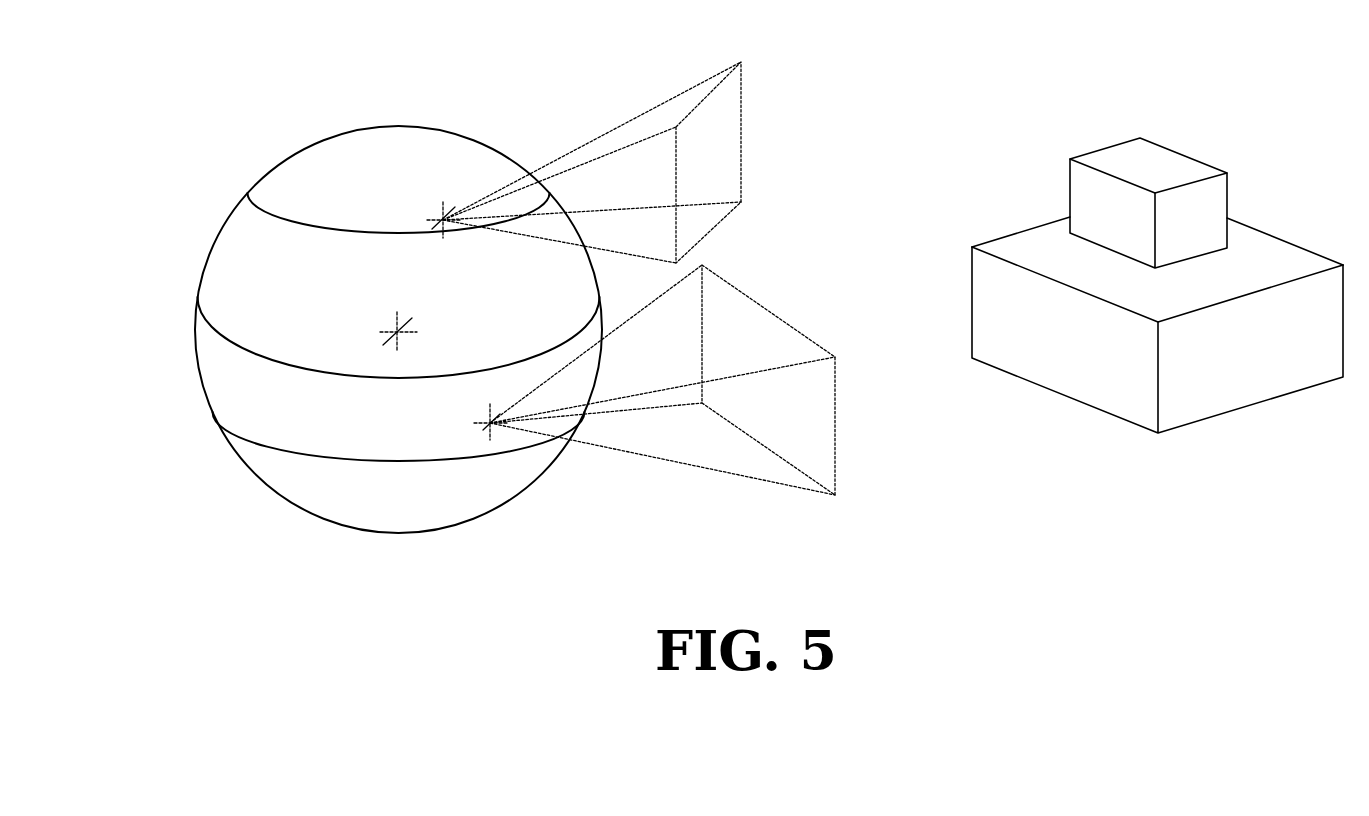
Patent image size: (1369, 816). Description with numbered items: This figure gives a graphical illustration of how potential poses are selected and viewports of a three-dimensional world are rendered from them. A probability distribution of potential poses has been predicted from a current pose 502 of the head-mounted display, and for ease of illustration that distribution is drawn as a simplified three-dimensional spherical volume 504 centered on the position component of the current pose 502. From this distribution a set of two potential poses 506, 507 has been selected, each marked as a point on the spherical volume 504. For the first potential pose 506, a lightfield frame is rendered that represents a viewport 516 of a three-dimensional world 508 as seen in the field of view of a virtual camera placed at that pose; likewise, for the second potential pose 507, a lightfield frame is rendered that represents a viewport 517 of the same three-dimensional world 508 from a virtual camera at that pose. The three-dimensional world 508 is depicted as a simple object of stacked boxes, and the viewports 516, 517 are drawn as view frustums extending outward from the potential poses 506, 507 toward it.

The current pose 502 is at (380, 332).
The spherical volume 504 is at (195, 350).
The potential pose 506 is at (427, 220).
The potential pose 507 is at (475, 423).
The 3D world 508 is at (1070, 138).
The viewport 516 is at (741, 147).
The viewport 517 is at (835, 447).